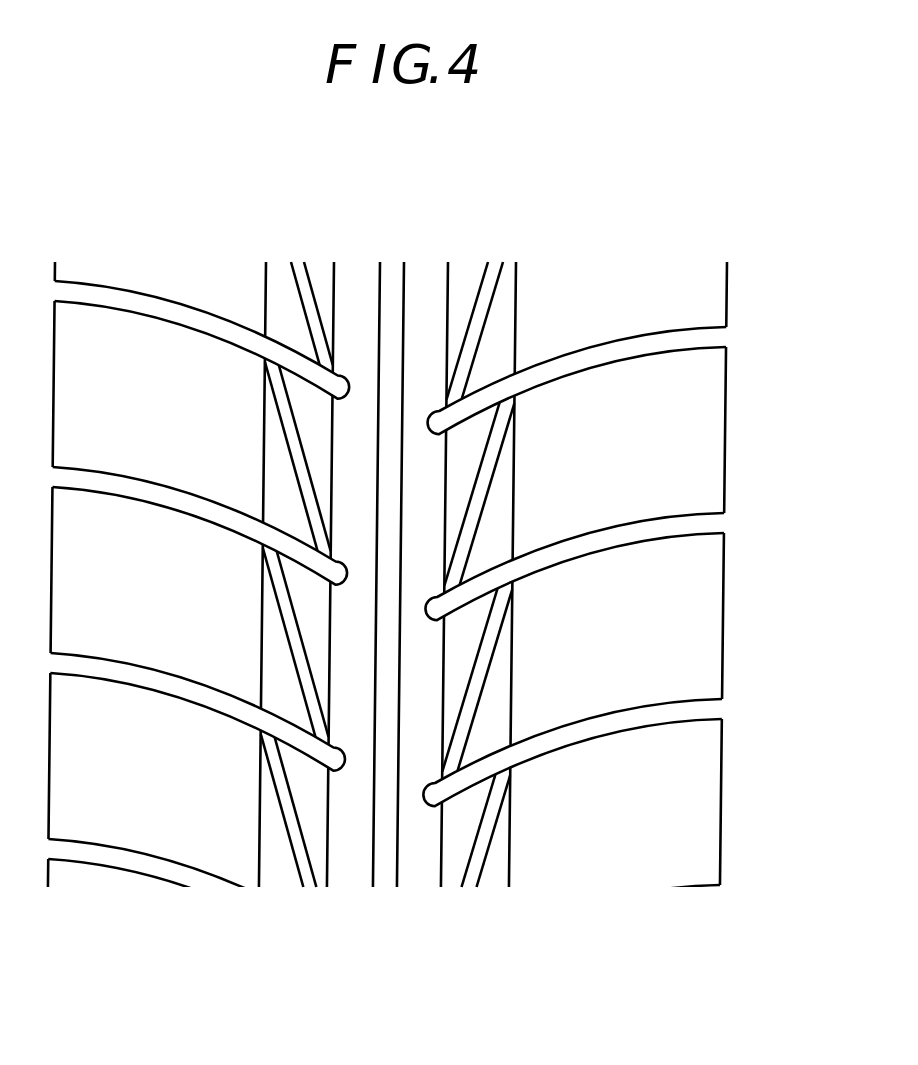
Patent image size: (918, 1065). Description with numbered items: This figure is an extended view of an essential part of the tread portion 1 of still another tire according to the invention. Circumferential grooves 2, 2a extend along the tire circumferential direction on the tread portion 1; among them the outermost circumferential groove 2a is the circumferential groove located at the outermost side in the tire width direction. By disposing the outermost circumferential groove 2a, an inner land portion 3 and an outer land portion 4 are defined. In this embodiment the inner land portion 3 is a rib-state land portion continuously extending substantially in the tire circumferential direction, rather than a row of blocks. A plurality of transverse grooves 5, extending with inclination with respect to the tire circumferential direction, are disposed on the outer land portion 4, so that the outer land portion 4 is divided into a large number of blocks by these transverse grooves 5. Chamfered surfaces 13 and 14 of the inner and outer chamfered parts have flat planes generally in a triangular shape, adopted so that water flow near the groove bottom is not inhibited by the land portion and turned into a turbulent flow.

The tread portion 1 is at (585, 243).
The circumferential groove 2 is at (392, 272).
The outermost circumferential groove 2a is at (315, 268).
The inner land portion 3 is at (360, 272).
The outer land portion 4 is at (702, 446).
The transverse groove 5 is at (710, 338).
The chamfered surface 13 is at (463, 643).
The chamfered surface 14 is at (487, 717).